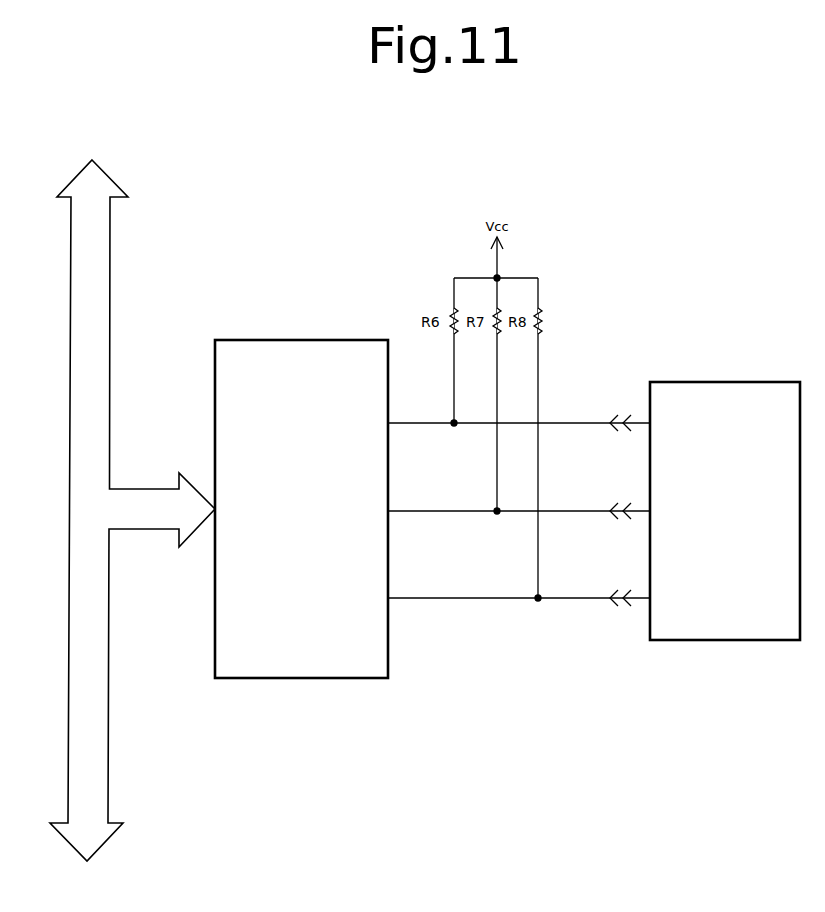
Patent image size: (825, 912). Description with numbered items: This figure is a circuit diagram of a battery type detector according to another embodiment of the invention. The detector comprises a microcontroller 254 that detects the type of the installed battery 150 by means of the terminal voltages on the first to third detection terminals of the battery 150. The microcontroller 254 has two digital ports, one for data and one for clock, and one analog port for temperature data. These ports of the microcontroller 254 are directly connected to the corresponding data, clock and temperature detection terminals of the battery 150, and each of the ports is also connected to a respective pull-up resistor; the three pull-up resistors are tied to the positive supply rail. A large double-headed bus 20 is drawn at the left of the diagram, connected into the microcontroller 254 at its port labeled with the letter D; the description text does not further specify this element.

The bus 20 is at (90, 776).
The microcontroller 254 is at (270, 340).
The battery 150 is at (718, 382).